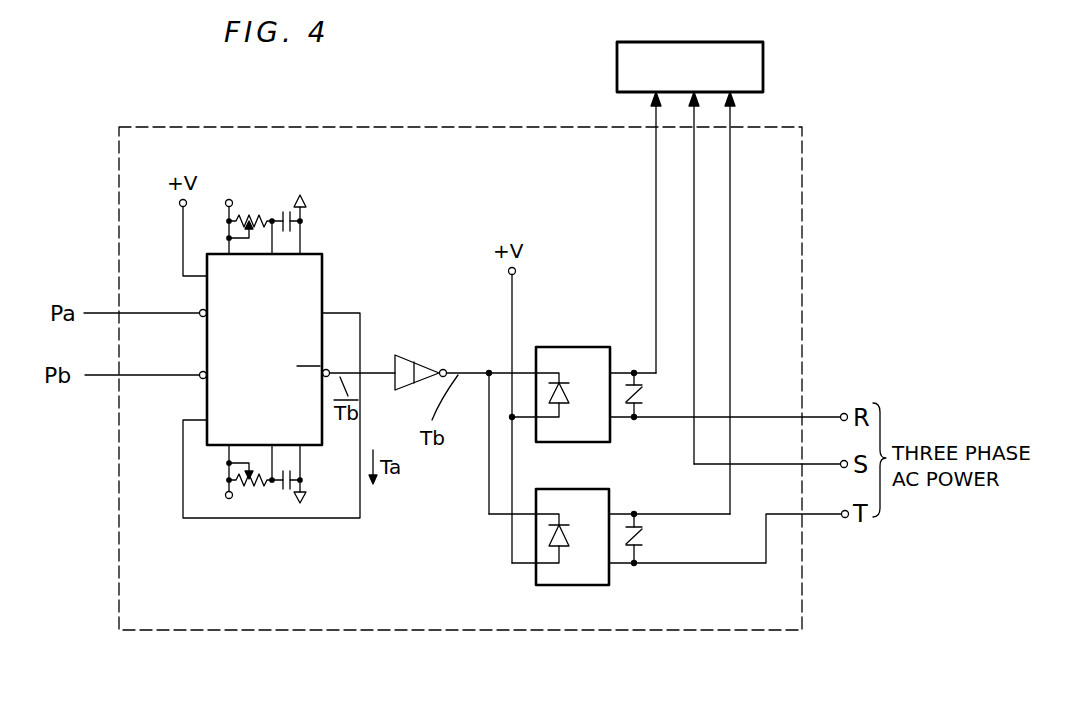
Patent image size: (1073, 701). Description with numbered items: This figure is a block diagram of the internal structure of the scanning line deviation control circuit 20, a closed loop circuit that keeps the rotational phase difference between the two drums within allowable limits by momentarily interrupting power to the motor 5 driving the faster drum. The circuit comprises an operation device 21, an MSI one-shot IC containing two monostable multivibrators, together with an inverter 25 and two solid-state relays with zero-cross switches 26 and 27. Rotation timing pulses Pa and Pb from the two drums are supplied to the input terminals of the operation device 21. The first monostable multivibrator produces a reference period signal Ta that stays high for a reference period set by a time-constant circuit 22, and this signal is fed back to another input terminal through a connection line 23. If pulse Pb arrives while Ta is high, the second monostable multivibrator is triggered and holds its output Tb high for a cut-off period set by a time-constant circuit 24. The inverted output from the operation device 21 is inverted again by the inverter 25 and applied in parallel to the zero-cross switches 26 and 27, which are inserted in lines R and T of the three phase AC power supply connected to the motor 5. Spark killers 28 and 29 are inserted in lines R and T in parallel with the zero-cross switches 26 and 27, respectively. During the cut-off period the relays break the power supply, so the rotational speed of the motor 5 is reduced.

The scanning line deviation control circuit 20 is at (307, 127).
The operation device 21 is at (322, 253).
The time-constant circuit 22 is at (267, 203).
The connection line 23 is at (352, 312).
The time-constant circuit 24 is at (248, 500).
The inverter 25 is at (397, 356).
The solid-state relay (zero-cross switch) 26 is at (562, 347).
The solid-state relay (zero-cross switch) 27 is at (556, 489).
The spark killer 28 is at (642, 392).
The spark killer 29 is at (652, 540).
The motor 5 is at (765, 70).